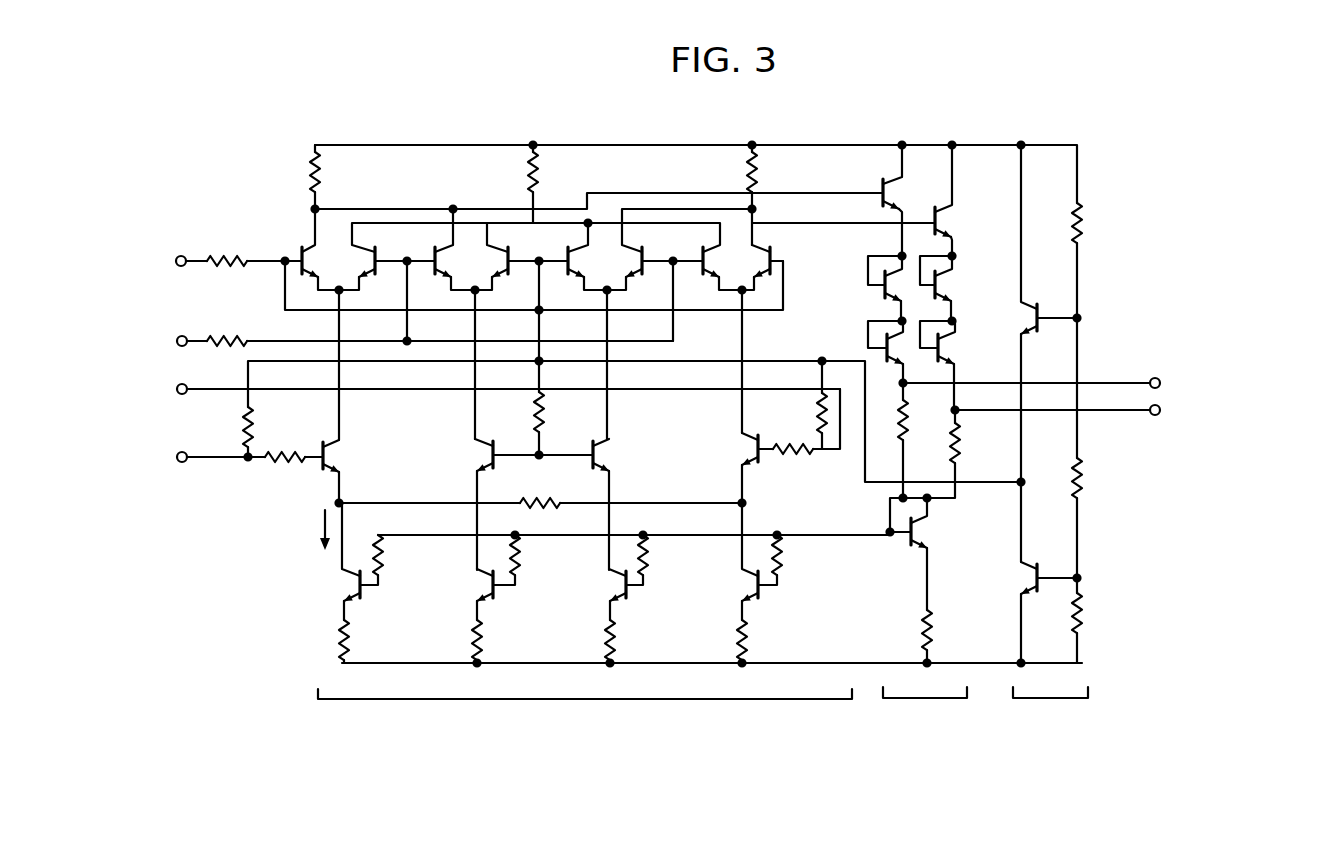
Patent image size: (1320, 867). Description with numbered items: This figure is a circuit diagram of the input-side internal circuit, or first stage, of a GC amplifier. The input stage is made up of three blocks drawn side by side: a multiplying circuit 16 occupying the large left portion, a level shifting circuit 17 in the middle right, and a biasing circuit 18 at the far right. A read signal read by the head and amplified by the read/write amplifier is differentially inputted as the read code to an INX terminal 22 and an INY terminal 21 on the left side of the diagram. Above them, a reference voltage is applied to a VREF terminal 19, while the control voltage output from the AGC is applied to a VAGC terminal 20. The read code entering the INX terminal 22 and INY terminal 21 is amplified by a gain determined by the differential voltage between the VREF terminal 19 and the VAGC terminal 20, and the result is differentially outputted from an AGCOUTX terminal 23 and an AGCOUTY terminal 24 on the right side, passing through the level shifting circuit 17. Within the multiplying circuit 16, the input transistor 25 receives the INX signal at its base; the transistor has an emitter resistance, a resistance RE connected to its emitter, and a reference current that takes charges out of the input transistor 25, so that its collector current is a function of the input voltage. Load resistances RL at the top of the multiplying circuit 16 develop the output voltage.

The multiplying circuit 16 is at (662, 455).
The level shifting circuit 17 is at (886, 464).
The biasing circuit 18 is at (1091, 452).
The VREF terminal 19 is at (103, 241).
The VAGC terminal 20 is at (110, 326).
The INY terminal 21 is at (106, 374).
The INX terminal 22 is at (106, 441).
The AGCOUTX terminal 23 is at (1248, 355).
The AGCOUTY terminal 24 is at (1235, 425).
The input transistor Q1 25 is at (369, 440).